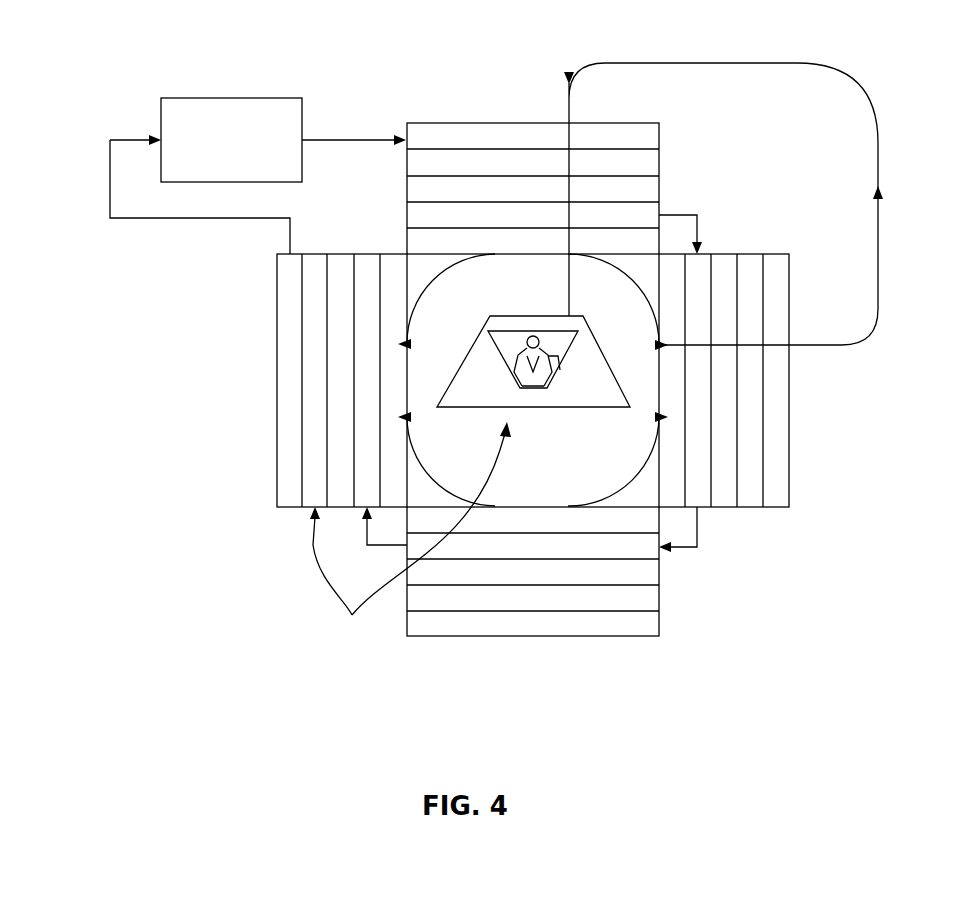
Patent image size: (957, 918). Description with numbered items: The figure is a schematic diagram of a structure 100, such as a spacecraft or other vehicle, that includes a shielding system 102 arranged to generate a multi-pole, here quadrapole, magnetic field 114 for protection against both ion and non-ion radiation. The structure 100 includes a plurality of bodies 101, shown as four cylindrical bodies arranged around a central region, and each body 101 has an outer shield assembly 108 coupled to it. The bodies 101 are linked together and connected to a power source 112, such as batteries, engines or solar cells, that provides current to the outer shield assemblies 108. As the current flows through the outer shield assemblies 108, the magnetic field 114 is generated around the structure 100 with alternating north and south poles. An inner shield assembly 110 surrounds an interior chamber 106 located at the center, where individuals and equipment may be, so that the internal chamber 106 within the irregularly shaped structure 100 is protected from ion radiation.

The structure 100 is at (450, 74).
The bodies 101 is at (419, 123).
The shielding system 102 is at (410, 536).
The internal chamber 106 is at (567, 337).
The outer shield assembly 108 is at (478, 148).
The inner shield assembly 110 is at (540, 323).
The power source 112 is at (222, 98).
The magnetic field 114 is at (740, 63).